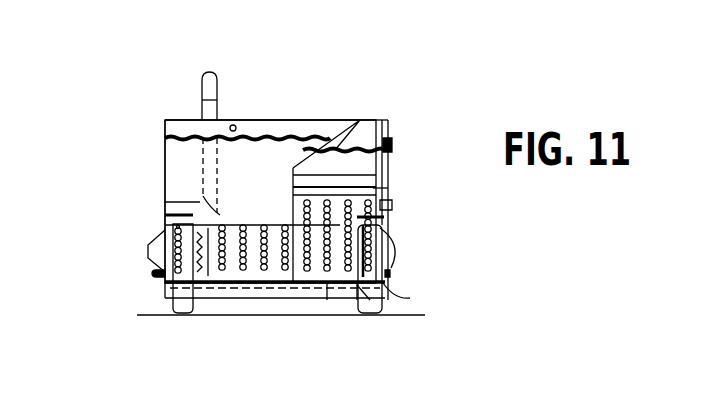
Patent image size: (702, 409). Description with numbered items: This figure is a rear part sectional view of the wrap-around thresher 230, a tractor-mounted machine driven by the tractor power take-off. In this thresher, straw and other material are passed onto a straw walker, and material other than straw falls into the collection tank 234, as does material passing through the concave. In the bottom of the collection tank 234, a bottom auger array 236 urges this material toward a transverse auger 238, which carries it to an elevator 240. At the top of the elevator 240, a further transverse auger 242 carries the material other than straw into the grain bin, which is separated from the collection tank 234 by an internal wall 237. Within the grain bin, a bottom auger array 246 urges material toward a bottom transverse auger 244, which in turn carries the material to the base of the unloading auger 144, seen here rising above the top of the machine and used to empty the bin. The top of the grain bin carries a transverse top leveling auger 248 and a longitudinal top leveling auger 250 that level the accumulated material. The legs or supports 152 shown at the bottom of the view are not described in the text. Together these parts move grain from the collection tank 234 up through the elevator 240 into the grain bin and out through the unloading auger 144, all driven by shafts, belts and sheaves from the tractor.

The wrap-around thresher 230 is at (142, 284).
The longitudinal top leveling auger 250 is at (183, 120).
The unloading auger 144 is at (200, 71).
The transverse top leveling auger 248 is at (233, 125).
The internal wall 237 is at (347, 117).
The bottom auger array 246 is at (284, 226).
The bottom transverse auger 244 is at (240, 286).
The collection tank 234 is at (327, 288).
The leg 152 is at (180, 316).
The transverse auger 242 is at (383, 115).
The elevator 240 is at (392, 206).
The bottom auger array 236 is at (397, 257).
The transverse auger 238 is at (381, 300).